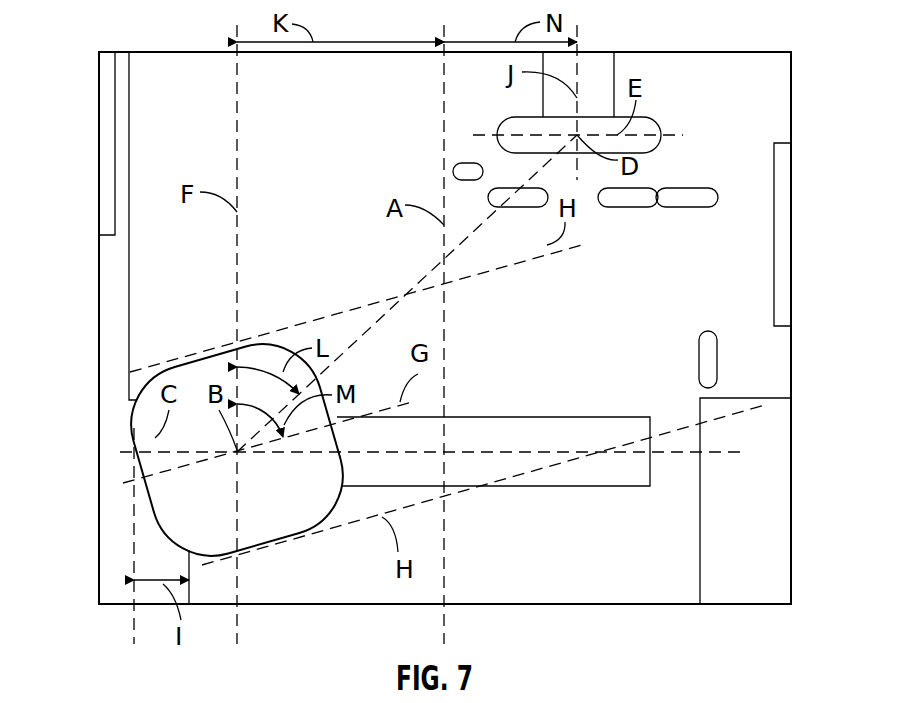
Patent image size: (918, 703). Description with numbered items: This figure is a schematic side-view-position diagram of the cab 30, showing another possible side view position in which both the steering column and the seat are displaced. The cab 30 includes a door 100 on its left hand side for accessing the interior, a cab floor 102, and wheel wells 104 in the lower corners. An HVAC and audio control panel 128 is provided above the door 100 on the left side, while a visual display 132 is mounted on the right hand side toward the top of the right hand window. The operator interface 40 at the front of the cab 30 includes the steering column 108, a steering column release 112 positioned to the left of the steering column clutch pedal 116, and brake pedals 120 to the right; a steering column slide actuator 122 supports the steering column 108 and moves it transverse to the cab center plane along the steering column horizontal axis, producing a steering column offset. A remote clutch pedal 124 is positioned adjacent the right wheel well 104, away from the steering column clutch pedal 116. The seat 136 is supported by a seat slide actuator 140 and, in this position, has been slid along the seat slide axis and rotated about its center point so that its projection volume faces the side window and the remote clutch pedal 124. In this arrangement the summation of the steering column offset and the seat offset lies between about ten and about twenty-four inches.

The cab 30 is at (822, 31).
The operator interface 40 is at (640, 88).
The door 100 is at (130, 345).
The cab floor 102 is at (550, 356).
The wheel wells 104 is at (99, 560).
The steering column 108 is at (635, 117).
The steering column release 112 is at (453, 172).
The steering column clutch pedal 116 is at (512, 208).
The brake pedals 120 is at (682, 208).
The steering column slide actuator 122 is at (614, 60).
The remote clutch pedal 124 is at (717, 362).
The HVAC and audio control panel 128 is at (115, 145).
The visual display 132 is at (783, 268).
The seat 136 is at (320, 388).
The seat slide actuator 140 is at (610, 417).